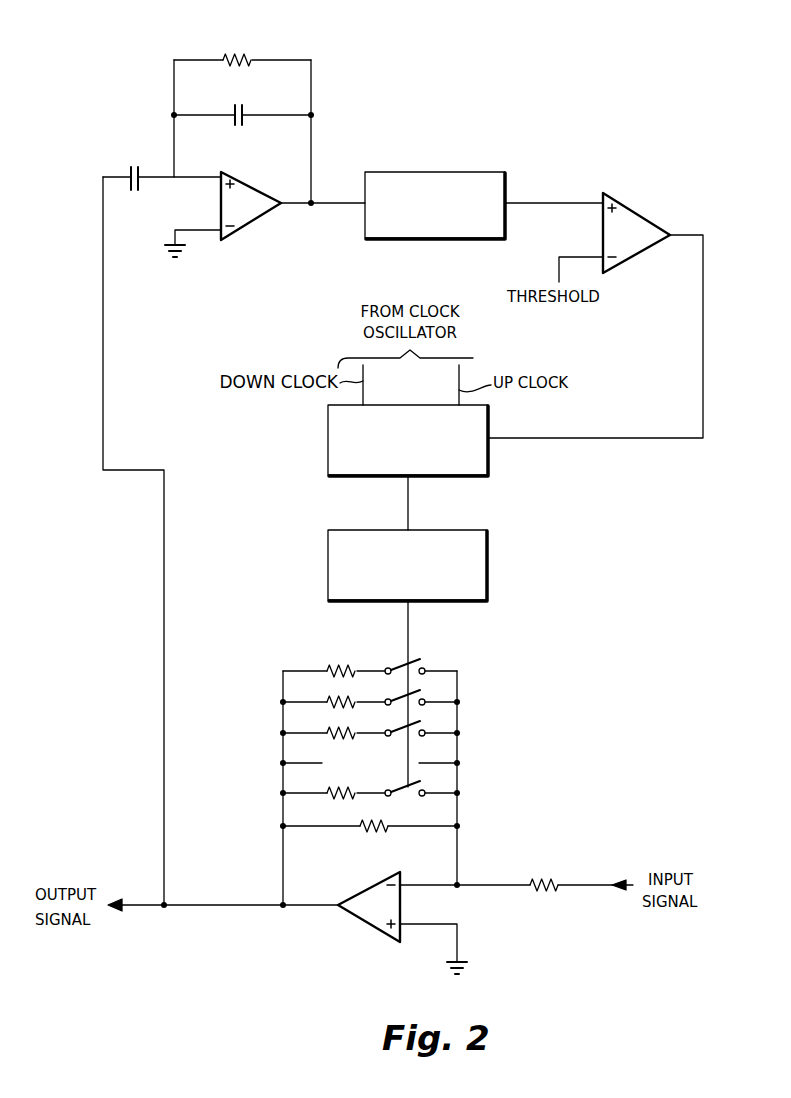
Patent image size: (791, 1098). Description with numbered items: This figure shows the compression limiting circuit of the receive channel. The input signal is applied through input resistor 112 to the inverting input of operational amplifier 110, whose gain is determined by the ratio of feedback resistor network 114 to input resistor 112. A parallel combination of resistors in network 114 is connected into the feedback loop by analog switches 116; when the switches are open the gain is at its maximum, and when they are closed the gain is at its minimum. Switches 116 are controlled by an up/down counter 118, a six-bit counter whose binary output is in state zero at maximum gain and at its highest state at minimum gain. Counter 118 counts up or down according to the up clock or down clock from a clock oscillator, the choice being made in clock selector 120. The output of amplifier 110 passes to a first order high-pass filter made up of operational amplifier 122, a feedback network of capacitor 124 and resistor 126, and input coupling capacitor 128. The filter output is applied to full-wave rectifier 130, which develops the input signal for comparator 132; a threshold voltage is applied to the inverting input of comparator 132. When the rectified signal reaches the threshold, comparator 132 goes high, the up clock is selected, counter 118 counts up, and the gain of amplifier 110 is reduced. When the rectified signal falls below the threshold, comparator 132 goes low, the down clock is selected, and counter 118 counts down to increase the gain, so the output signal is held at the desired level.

The operational amplifier 110 is at (362, 919).
The input resistor 112 is at (558, 882).
The feedback resistor network 114 is at (274, 728).
The analog switches 116 is at (435, 661).
The up/down counter 118 is at (489, 572).
The clock selector 120 is at (490, 462).
The operational amplifier 122 is at (254, 220).
The capacitor 124 is at (242, 125).
The resistor 126 is at (240, 55).
The input coupling capacitor 128 is at (131, 173).
The full-wave rectifier 130 is at (437, 170).
The comparator 132 is at (645, 219).